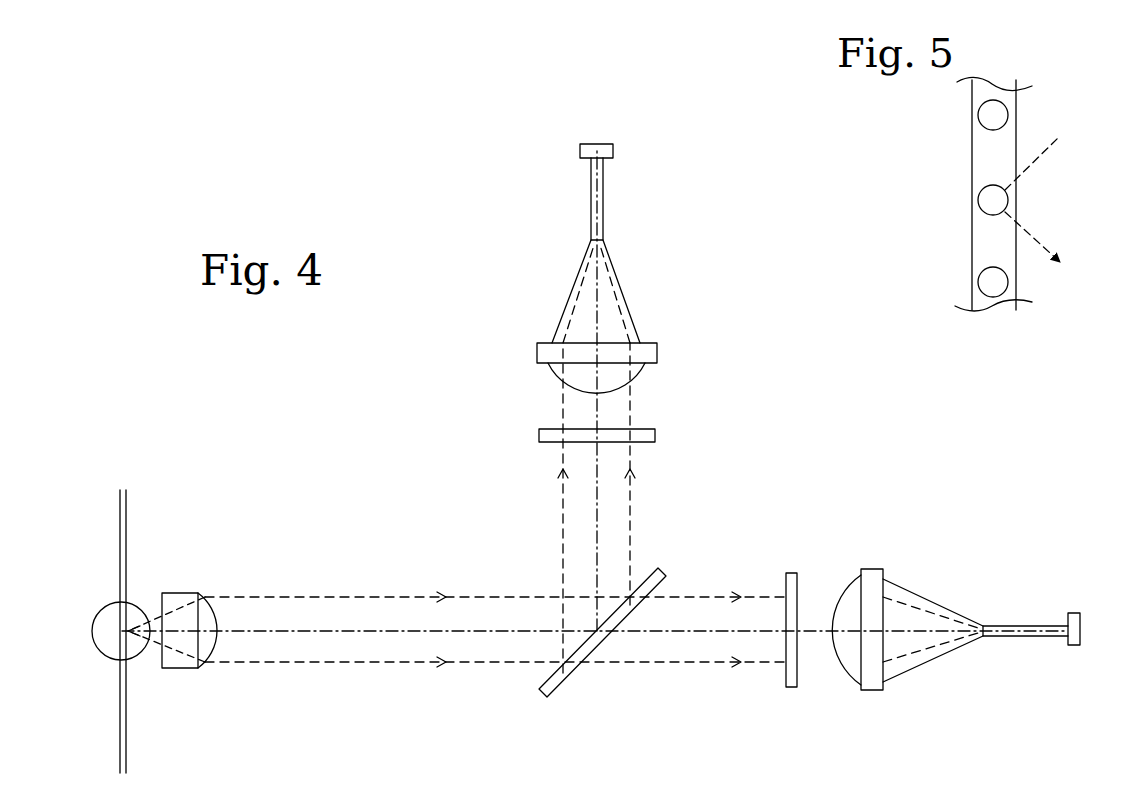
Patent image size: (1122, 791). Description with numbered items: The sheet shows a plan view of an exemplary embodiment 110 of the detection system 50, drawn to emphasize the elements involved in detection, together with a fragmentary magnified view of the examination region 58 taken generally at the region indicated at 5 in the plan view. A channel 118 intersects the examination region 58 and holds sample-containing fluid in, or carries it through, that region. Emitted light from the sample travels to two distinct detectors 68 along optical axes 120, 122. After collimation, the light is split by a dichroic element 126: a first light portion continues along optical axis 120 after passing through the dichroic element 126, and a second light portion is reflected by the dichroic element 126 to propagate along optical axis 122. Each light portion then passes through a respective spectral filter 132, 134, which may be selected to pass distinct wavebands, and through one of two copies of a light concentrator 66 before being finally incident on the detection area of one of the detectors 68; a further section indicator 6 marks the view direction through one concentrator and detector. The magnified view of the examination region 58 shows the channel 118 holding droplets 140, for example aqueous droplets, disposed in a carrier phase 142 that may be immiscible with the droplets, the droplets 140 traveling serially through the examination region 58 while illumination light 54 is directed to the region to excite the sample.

In FIG. 4, the detection system 50 is at (410, 382).
In FIG. 4, the exemplary embodiment 110 is at (436, 424).
In FIG. 4, the channel 118 is at (124, 550).
In FIG. 5, the channel 118 is at (975, 146).
In FIG. 4, the examination region 58 is at (108, 598).
In FIG. 5, the examination region 58 is at (943, 222).
In FIG. 4, the region indicated at 5 is at (130, 654).
In FIG. 4, the section view indicator 6 is at (637, 166).
In FIG. 4, the optical axis 120 is at (706, 634).
In FIG. 4, the optical axis 122 is at (600, 520).
In FIG. 4, the dichroic element 126 is at (562, 688).
In FIG. 4, the spectral filter 132 is at (797, 684).
In FIG. 4, the spectral filter 134 is at (640, 430).
In FIG. 4, the light concentrator 66 is at (636, 330).
In FIG. 4, the detector 68 is at (601, 160).
In FIG. 5, the illumination light 54 is at (1035, 245).
In FIG. 5, the droplets 140 is at (993, 215).
In FIG. 5, the carrier phase 142 is at (980, 250).